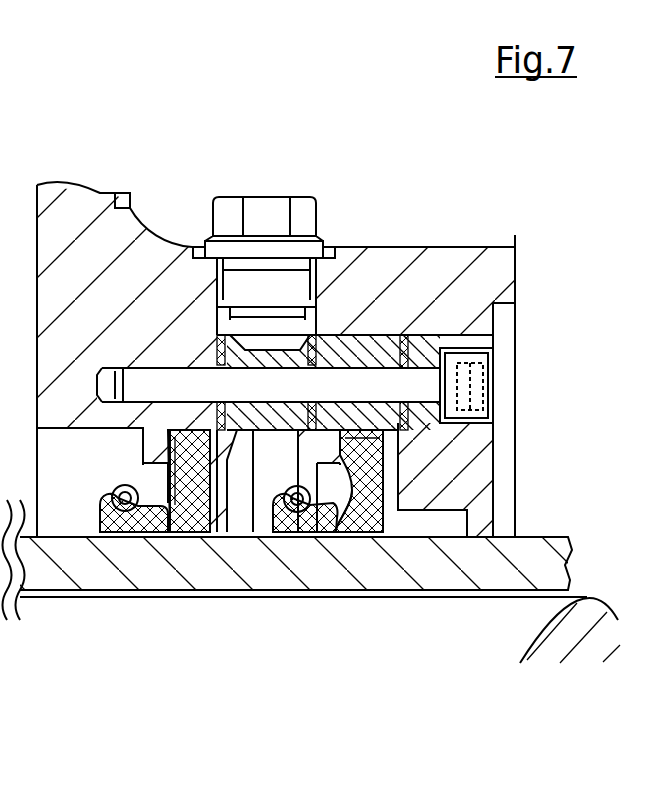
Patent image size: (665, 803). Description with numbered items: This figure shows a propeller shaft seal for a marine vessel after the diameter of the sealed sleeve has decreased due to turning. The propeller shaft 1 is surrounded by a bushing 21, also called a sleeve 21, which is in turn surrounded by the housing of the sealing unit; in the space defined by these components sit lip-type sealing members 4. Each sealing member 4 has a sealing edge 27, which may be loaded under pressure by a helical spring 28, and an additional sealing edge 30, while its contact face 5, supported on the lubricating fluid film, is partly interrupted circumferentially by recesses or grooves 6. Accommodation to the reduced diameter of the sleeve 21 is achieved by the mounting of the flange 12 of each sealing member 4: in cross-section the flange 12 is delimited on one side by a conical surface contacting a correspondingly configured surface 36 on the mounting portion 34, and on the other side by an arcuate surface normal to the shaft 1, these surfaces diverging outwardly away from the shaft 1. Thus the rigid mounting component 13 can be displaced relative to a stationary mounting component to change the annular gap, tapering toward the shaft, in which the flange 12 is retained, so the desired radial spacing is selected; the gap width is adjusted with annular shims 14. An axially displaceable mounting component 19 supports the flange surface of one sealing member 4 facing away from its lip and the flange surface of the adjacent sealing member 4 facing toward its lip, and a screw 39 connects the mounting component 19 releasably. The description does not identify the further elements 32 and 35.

The propeller shaft 1 is at (503, 632).
The lip-type sealing member 4 is at (190, 532).
The contact face 5 is at (180, 532).
The recesses or grooves 6 is at (204, 532).
The flange 12 is at (217, 532).
The rigid mounting component 13 is at (433, 453).
The annular shims 14 is at (222, 315).
The axially displaceable mounting component 19 is at (352, 347).
The bushing 21 is at (520, 507).
The sealing edge 27 is at (142, 532).
The helical spring 28 is at (114, 520).
The additional sealing edge 30 is at (161, 505).
The screw 32 is at (223, 220).
The mounting portion 34 is at (113, 288).
The seal ring 35 is at (192, 440).
The surface 36 is at (128, 515).
The screw 39 is at (470, 387).